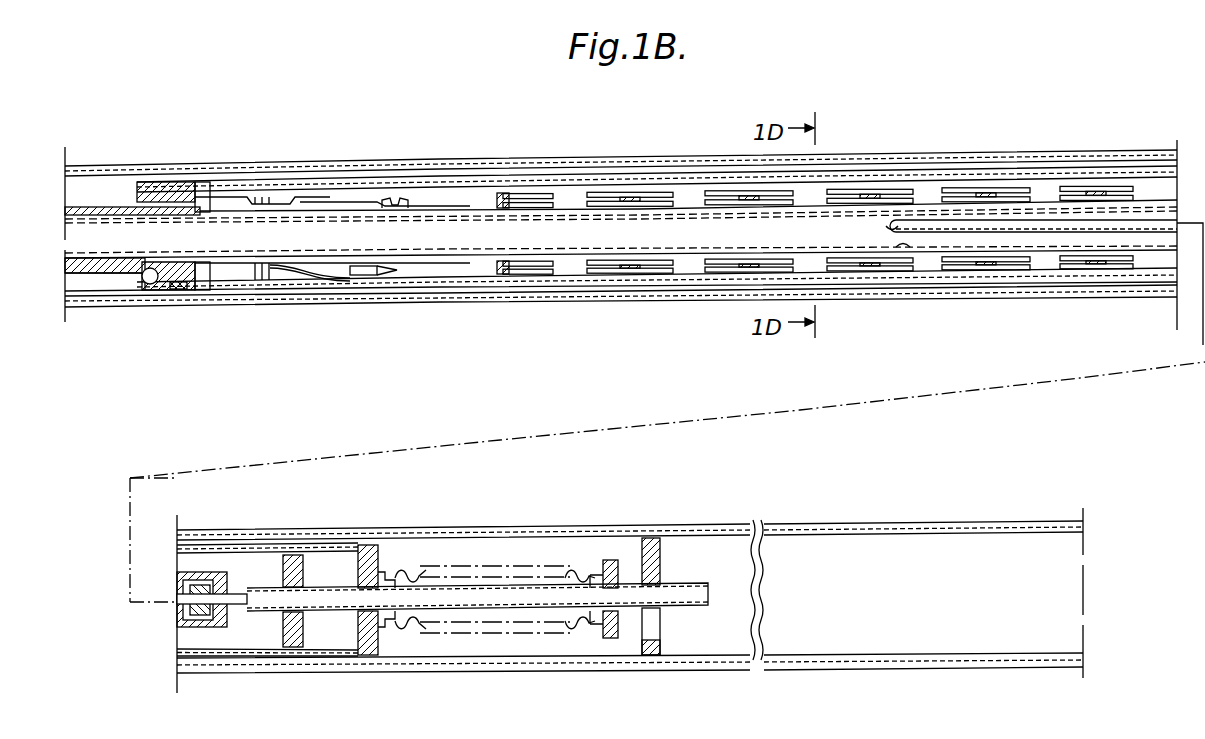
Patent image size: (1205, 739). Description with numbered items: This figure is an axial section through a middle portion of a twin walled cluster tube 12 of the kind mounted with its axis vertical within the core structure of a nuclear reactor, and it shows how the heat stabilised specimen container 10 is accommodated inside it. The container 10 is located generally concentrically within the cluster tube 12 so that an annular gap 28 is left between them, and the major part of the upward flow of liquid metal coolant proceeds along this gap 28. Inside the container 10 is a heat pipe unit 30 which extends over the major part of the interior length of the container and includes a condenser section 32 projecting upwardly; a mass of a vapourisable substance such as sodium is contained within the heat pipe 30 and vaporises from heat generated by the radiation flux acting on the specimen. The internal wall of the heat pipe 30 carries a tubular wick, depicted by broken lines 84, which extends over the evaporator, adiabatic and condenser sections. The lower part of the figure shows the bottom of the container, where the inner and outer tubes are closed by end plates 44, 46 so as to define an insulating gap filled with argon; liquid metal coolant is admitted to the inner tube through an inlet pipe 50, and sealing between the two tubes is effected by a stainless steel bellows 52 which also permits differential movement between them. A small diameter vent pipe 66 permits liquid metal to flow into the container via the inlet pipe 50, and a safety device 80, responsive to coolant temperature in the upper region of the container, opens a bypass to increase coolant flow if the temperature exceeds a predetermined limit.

The specimen container 10 is at (705, 175).
The cluster tube 12 is at (472, 524).
The annular gap 28 is at (925, 172).
The heat pipe unit 30 is at (565, 210).
The condenser section 32 is at (95, 265).
The end plate 44 is at (370, 545).
The end plate 46 is at (302, 553).
The inlet pipe 50 is at (683, 585).
The stainless steel bellows 52 is at (525, 567).
The small diameter pipe 66 is at (293, 280).
The safety device 80 is at (428, 203).
The tubular wick 84 is at (912, 210).